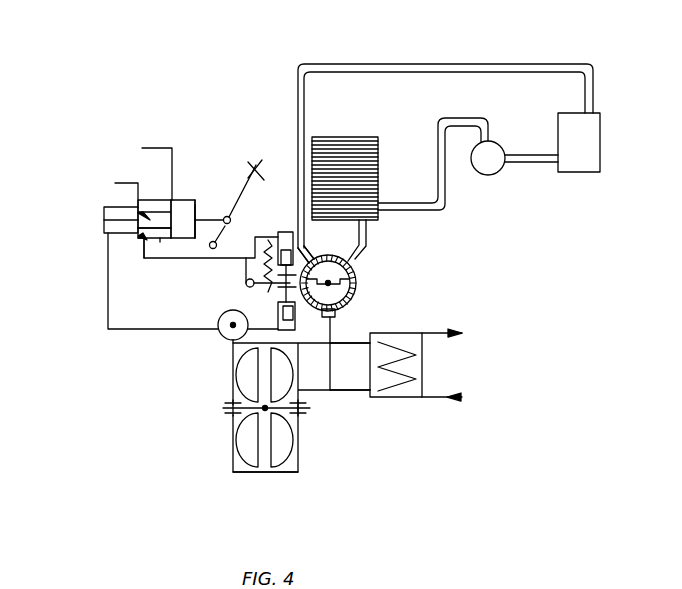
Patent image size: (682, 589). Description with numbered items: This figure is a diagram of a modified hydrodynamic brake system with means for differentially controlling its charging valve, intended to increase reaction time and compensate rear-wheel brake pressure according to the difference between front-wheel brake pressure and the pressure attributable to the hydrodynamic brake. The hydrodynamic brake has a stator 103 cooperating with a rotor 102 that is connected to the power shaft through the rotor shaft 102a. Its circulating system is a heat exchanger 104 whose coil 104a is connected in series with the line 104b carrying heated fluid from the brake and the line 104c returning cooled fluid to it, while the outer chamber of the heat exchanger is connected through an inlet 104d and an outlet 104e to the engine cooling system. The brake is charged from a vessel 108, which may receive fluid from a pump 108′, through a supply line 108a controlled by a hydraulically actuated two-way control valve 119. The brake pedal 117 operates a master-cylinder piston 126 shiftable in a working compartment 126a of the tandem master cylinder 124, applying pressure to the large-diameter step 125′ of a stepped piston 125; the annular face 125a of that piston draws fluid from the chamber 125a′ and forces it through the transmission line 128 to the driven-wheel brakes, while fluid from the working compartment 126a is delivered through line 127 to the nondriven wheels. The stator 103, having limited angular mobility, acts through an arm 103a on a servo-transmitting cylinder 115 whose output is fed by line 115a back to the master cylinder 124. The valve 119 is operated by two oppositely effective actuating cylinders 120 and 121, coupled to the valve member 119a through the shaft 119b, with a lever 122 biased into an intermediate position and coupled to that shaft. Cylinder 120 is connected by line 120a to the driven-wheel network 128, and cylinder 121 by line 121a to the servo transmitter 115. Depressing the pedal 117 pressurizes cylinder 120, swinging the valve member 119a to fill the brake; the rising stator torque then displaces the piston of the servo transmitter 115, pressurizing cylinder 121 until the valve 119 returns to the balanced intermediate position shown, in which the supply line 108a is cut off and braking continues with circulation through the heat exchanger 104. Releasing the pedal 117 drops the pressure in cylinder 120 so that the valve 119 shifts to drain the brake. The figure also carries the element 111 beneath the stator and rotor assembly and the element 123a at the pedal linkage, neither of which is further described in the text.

The rotor 102 is at (285, 380).
The rotor shaft 102a is at (303, 414).
The stator 103 is at (240, 445).
The arm 103a is at (232, 347).
The heat exchanger 104 is at (403, 398).
The coil 104a is at (398, 345).
The line 104b is at (350, 340).
The line 104c is at (374, 398).
The inlet 104d is at (460, 398).
The outlet 104e is at (435, 333).
The charging vessel 108 is at (333, 137).
The pump 108′ is at (484, 178).
The supply line 108a is at (366, 241).
The housing 111 is at (277, 474).
The servo-transmitting cylinder 115 is at (225, 335).
The line 115a is at (105, 313).
The brake pedal 117 is at (266, 159).
The control valve 119 is at (358, 290).
The valve member 119a is at (353, 273).
The shaft 119b is at (307, 259).
The actuating cylinder 120 is at (286, 232).
The line 120a is at (221, 262).
The actuating cylinder 121 is at (294, 328).
The line 121a is at (246, 294).
The lever 122 is at (236, 238).
The switch contact 123a is at (238, 217).
The tandem master cylinder 124 is at (140, 243).
The stepped piston 125 is at (148, 216).
The large-diameter step 125′ is at (172, 212).
The annular face 125a is at (160, 242).
The chamber 125a′ is at (140, 238).
The master-cylinder piston 126 is at (198, 200).
The working compartment 126a is at (180, 242).
The line 127 is at (155, 145).
The transmission line 128 is at (127, 182).